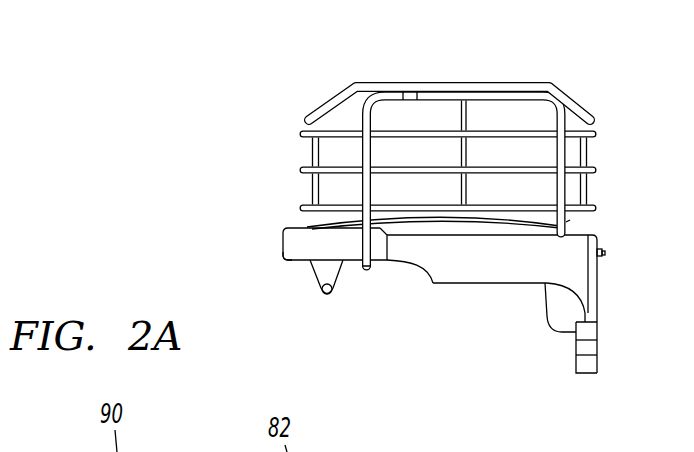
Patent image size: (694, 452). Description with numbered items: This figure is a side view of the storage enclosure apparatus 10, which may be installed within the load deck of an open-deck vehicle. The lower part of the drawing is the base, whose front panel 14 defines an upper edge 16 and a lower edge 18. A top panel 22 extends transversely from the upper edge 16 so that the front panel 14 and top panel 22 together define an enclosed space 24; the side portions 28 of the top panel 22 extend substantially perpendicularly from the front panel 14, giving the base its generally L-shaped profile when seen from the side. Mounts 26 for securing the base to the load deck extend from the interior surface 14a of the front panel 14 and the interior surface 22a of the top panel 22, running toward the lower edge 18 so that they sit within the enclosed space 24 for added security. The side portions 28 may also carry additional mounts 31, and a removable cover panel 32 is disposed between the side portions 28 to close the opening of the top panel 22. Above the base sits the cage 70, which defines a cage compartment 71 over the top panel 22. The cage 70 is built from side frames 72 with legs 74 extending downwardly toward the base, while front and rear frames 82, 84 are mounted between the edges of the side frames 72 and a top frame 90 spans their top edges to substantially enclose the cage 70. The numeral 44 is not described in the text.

The storage enclosure apparatus 10 is at (232, 180).
The front panel 14 is at (597, 350).
The interior surface of the front panel 14a is at (576, 358).
The upper edge 16 is at (597, 233).
The lower edge 18 is at (588, 367).
The top panel 22 is at (303, 246).
The interior surface of the top panel 22a is at (509, 285).
The enclosed space 24 is at (447, 326).
The mounts 26 is at (547, 318).
The side portions 28 is at (425, 273).
The additional mounts 31 is at (322, 295).
The removable cover panel 32 is at (312, 228).
The lower corner of support block 44 is at (283, 258).
The cage 70 is at (293, 92).
The cage compartment 71 is at (427, 150).
The side frames 72 is at (548, 90).
The legs 74 is at (568, 220).
The front frame 82 is at (595, 133).
The rear frame 84 is at (303, 169).
The top frame 90 is at (380, 85).